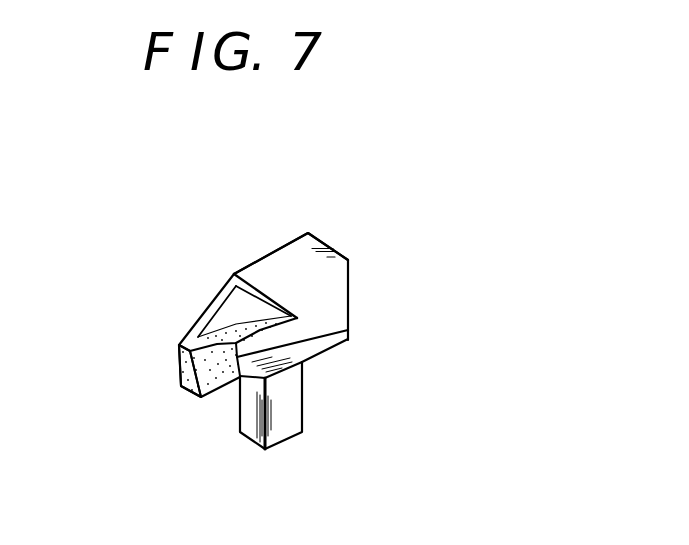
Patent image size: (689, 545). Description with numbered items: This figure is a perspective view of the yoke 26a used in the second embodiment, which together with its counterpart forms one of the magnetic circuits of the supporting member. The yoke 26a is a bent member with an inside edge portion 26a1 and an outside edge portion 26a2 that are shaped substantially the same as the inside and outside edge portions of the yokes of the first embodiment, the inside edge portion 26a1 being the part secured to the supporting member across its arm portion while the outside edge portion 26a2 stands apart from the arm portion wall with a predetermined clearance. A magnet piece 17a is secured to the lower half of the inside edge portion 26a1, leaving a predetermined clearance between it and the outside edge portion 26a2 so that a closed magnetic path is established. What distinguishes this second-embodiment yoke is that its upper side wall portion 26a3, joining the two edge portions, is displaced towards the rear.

The yoke 26a is at (348, 287).
The inside edge portion 26a1 is at (207, 307).
The outside edge portion 26a2 is at (302, 392).
The upper side wall portion 26a3 is at (291, 259).
The magnet piece 17a is at (198, 388).